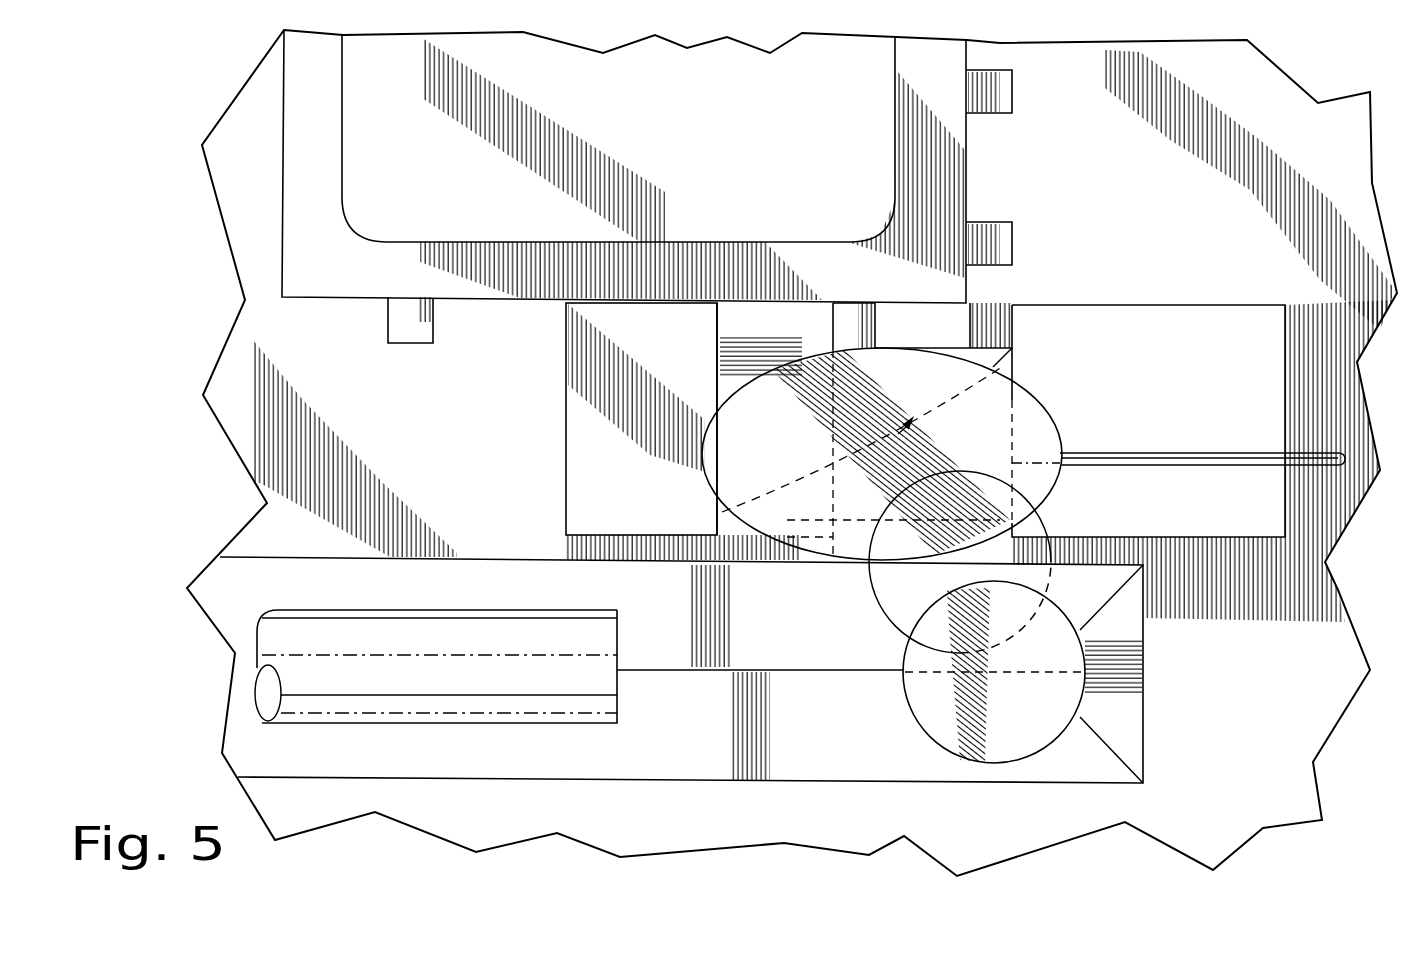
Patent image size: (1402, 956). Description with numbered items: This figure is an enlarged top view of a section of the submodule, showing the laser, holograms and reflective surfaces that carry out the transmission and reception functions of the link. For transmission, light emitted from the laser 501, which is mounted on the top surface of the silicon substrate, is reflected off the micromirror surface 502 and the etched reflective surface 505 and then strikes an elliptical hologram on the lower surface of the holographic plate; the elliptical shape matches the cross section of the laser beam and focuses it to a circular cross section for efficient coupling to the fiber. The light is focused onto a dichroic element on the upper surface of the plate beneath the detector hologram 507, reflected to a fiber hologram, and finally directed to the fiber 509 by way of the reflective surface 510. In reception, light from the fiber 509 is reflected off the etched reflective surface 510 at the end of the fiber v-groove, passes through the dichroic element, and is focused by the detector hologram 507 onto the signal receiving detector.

The laser 501 is at (1162, 328).
The micromirror surface 502 is at (758, 337).
The etched reflective surface 505 is at (735, 508).
The detector hologram 507 is at (890, 591).
The fiber 509 is at (568, 677).
The reflective surface 510 is at (1140, 670).